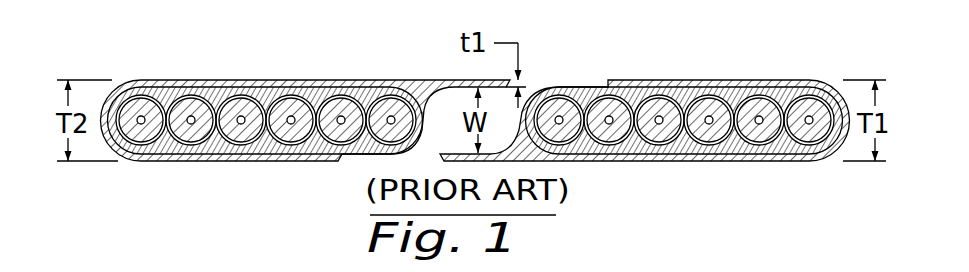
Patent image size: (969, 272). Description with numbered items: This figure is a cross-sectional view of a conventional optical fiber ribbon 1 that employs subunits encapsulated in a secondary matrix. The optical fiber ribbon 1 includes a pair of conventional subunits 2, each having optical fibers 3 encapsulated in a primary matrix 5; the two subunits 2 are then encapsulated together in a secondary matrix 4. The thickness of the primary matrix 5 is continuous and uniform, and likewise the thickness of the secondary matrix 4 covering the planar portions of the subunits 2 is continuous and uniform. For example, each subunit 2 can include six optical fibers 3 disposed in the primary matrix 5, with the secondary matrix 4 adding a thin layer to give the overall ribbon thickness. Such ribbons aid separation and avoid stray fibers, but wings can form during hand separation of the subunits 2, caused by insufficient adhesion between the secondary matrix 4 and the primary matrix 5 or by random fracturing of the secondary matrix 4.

The optical fiber ribbon 1 is at (155, 70).
The subunit 2 is at (266, 94).
The optical fiber 3 is at (139, 98).
The secondary matrix 4 is at (345, 80).
The primary matrix 5 is at (211, 93).